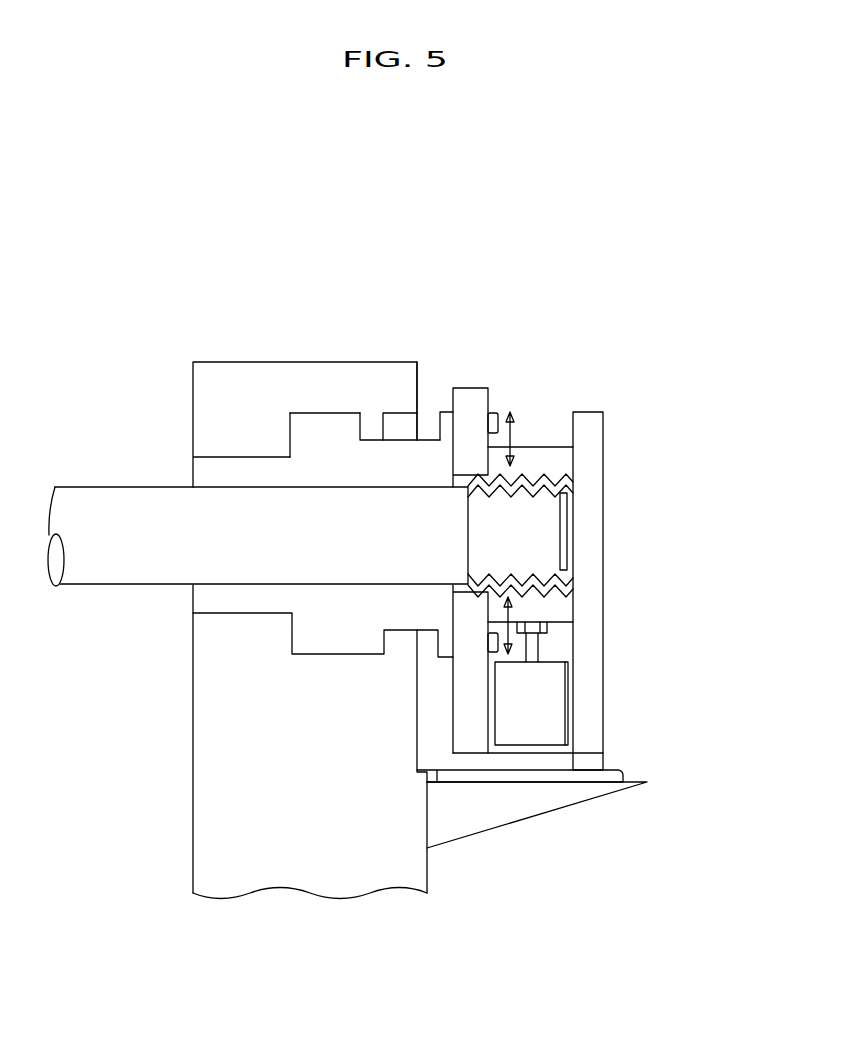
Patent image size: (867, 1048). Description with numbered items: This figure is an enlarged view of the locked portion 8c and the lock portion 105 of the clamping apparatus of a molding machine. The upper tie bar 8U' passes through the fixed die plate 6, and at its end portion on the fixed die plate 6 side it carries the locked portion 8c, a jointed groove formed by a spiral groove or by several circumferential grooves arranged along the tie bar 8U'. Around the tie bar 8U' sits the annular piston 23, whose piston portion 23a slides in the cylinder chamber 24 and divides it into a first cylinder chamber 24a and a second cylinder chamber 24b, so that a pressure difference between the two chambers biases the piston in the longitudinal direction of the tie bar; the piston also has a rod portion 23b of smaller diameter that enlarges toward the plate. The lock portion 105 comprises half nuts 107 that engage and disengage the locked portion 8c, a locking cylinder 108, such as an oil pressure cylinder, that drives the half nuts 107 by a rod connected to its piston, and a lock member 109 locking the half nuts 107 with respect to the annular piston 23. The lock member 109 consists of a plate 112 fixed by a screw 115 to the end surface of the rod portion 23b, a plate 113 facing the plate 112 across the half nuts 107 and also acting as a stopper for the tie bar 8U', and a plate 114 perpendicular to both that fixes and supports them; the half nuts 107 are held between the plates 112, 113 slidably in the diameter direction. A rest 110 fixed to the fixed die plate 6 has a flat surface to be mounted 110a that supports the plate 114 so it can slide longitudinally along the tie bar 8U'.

The fixed die plate 6 is at (191, 722).
The upper tie bar 8U' is at (258, 495).
The locked portion 8c is at (528, 493).
The annular piston 23 is at (332, 432).
The piston portion 23a is at (302, 440).
The rod portion 23b is at (388, 422).
The cylinder chamber 24 is at (397, 457).
The first cylinder chamber 24a is at (285, 438).
The second cylinder chamber 24b is at (371, 422).
The lock portion 105 is at (426, 595).
The half nut 107 is at (546, 450).
The locking cylinder 108 is at (550, 697).
The lock member 109 is at (590, 449).
The rest 110 is at (548, 815).
The surface to be mounted 110a is at (610, 772).
The plate 112 is at (470, 697).
The plate 113 is at (590, 499).
The plate 114 is at (490, 762).
The screw 115 is at (496, 410).